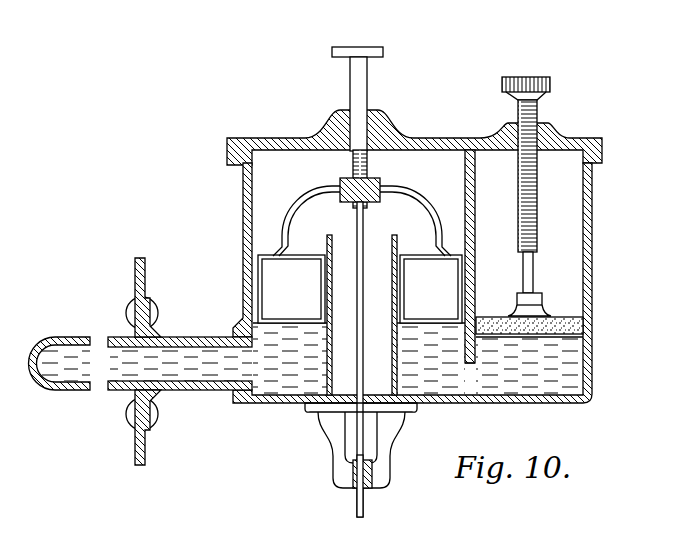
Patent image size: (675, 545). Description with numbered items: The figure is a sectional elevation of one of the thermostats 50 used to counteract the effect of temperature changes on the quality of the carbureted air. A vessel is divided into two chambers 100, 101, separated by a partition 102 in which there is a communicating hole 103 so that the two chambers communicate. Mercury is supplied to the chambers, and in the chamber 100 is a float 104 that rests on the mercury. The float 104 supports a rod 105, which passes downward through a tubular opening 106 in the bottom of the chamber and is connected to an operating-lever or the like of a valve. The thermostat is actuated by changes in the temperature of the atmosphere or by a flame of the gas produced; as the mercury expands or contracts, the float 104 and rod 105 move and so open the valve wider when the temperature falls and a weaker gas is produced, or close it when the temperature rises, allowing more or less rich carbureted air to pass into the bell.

The thermostat 50 is at (576, 203).
The chamber 100 is at (359, 237).
The chamber 101 is at (520, 197).
The partition 102 is at (467, 193).
The communicating hole 103 is at (476, 372).
The float 104 is at (360, 289).
The rod 105 is at (363, 258).
The tubular opening 106 is at (346, 413).